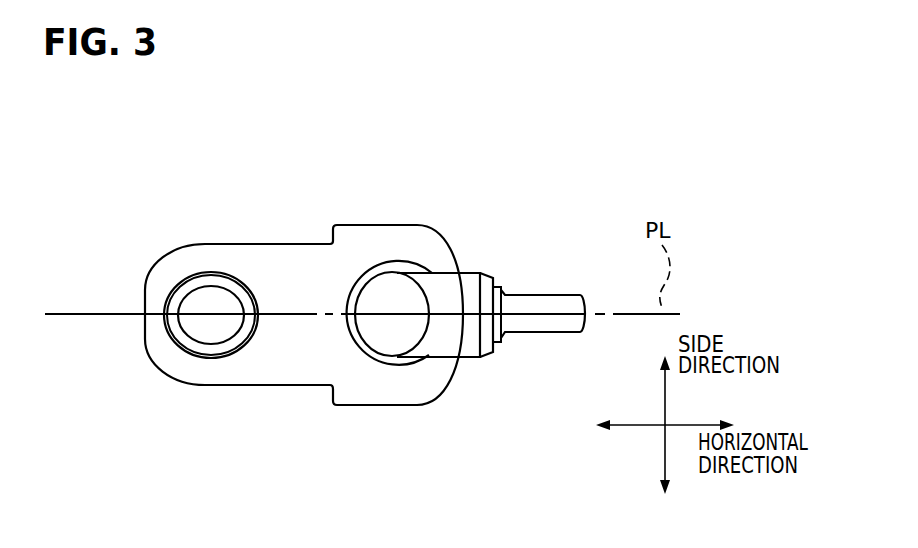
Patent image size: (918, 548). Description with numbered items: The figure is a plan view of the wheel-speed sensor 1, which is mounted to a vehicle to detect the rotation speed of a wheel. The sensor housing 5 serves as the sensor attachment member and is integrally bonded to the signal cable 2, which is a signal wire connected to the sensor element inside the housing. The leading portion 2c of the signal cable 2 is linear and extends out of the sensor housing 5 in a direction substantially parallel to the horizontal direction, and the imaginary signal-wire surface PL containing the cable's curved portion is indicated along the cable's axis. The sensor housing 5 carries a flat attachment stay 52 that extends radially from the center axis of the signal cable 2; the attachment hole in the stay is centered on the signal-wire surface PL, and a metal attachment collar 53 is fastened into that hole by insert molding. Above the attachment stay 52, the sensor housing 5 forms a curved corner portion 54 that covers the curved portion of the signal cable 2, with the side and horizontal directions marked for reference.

The wheel-speed sensor 1 is at (152, 135).
The signal cable 2 is at (572, 302).
The leading portion 2c is at (522, 328).
The sensor housing 5 is at (232, 253).
The attachment stay 52 is at (372, 237).
The attachment collar 53 is at (213, 348).
The corner portion 54 is at (412, 287).